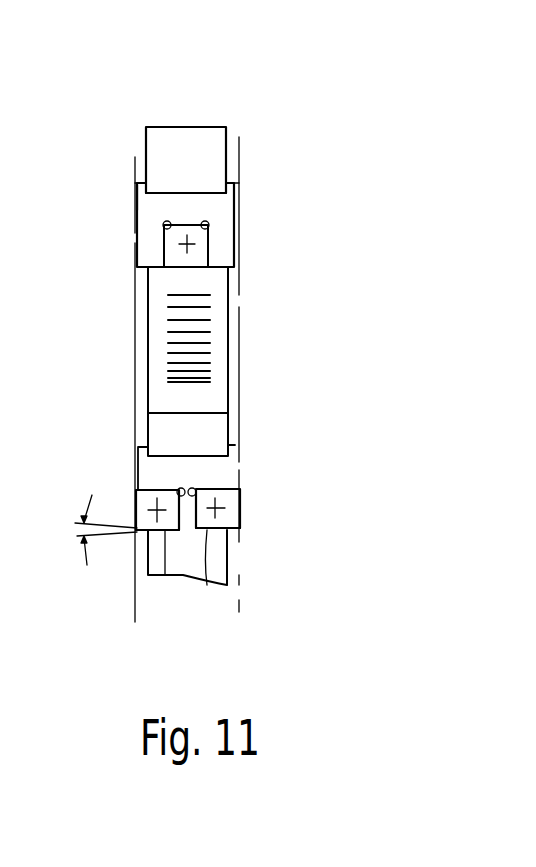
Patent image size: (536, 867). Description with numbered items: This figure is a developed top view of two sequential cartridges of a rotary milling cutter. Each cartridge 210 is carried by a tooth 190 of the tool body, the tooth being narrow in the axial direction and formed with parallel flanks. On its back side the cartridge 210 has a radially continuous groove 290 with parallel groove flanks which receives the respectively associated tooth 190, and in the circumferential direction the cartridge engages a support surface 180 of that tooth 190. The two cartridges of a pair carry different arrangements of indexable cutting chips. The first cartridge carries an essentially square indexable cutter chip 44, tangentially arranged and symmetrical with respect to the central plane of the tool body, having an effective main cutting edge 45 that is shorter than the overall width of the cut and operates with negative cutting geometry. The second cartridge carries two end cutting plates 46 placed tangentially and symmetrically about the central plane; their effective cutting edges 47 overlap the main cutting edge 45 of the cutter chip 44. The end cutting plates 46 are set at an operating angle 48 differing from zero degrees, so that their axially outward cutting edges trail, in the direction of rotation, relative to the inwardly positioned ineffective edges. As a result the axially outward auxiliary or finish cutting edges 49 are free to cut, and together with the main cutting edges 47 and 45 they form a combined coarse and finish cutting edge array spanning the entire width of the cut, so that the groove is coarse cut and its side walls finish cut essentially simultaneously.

The tooth 190 is at (162, 137).
The support surface 180 is at (190, 193).
The cartridge 210 is at (137, 213).
The radially continuous groove 290 is at (150, 200).
The indexable cutter chip 44 is at (177, 257).
The main cutting edge 45 is at (198, 268).
The end cutting plates 46 is at (148, 500).
The effective cutting edges 47 is at (166, 580).
The operating angle 48 is at (76, 523).
The auxiliary or finish cutting edges 49 is at (136, 532).